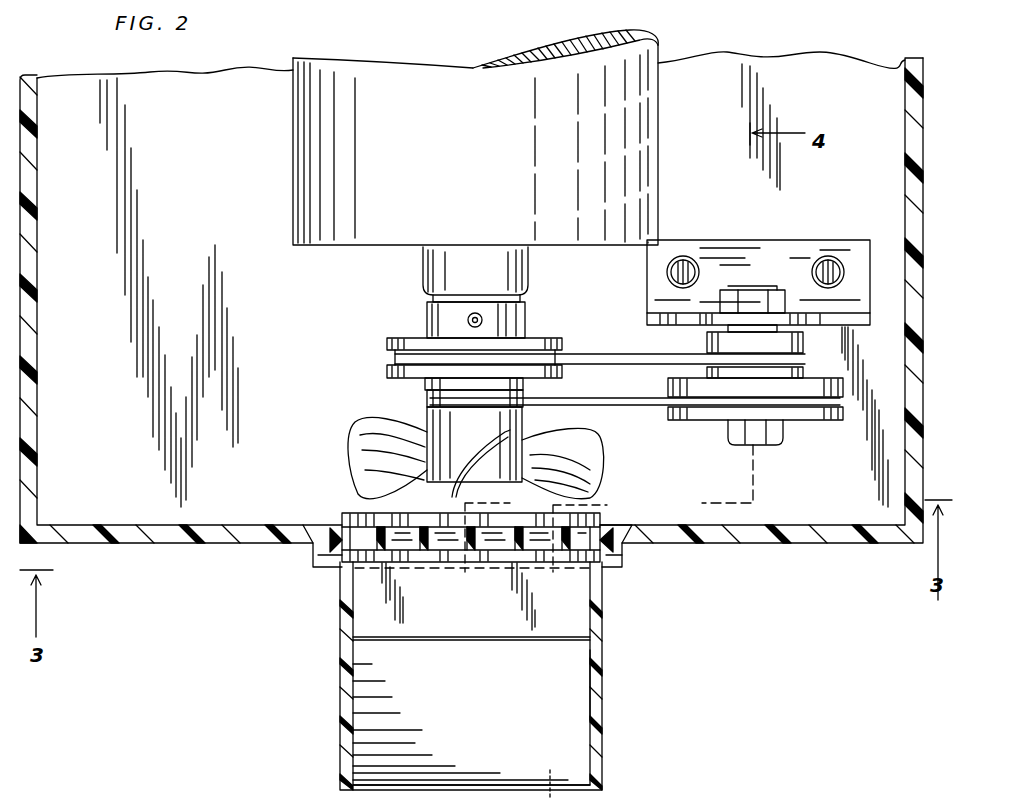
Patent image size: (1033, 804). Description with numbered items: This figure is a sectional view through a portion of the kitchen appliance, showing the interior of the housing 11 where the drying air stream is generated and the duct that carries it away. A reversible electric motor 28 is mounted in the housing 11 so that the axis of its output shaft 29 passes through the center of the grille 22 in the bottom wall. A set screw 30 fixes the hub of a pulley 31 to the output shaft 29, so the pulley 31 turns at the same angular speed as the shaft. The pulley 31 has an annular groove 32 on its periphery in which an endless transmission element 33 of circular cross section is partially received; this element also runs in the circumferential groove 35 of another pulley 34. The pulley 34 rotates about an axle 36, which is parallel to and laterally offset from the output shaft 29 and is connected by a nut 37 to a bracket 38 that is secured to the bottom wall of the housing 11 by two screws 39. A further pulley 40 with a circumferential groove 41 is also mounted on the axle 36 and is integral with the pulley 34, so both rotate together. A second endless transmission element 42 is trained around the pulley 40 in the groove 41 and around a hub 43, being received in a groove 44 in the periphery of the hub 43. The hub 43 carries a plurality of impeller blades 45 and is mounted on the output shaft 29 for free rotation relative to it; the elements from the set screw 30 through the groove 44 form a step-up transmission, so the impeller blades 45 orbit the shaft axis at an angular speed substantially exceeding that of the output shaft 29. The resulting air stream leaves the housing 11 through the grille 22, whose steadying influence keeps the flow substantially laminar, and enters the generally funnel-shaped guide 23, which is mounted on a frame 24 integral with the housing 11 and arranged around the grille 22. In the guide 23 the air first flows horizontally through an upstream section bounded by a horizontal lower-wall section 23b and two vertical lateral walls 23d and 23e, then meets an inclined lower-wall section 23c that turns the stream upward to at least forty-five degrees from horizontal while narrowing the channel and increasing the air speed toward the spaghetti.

The housing 11 is at (803, 543).
The grille 22 is at (375, 565).
The guide 23 is at (333, 741).
The substantially horizontal section of lower wall 23b is at (578, 745).
The inclined section of lower wall 23c is at (585, 598).
The lateral wall 23d is at (600, 680).
The lateral wall 23e is at (345, 700).
The frame 24 is at (312, 566).
The reversible motor 28 is at (302, 163).
The output shaft 29 is at (462, 292).
The set screw 30 is at (468, 320).
The pulley 31 is at (575, 328).
The annular groove 32 is at (386, 348).
The endless transmission element 33 is at (628, 362).
The pulley 34 is at (804, 343).
The circumferential groove 35 is at (804, 365).
The axle 36 is at (780, 437).
The nut 37 is at (788, 282).
The bracket 38 is at (777, 242).
The screws 39 is at (683, 256).
The further pulley 40 is at (703, 421).
The circumferential groove 41 is at (843, 392).
The endless transmission element 42 is at (642, 402).
The hub 43 is at (520, 434).
The groove 44 is at (430, 400).
The impeller blades 45 is at (595, 482).